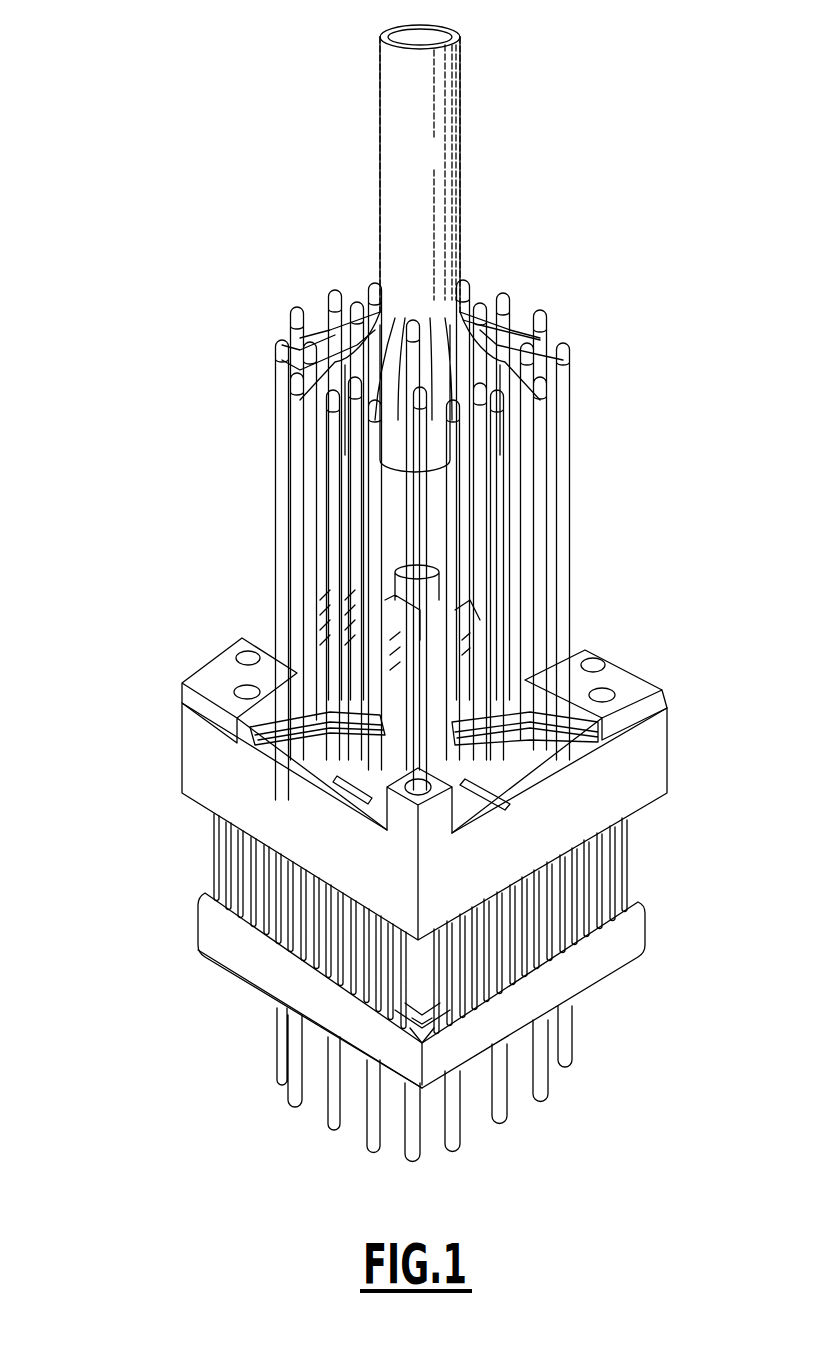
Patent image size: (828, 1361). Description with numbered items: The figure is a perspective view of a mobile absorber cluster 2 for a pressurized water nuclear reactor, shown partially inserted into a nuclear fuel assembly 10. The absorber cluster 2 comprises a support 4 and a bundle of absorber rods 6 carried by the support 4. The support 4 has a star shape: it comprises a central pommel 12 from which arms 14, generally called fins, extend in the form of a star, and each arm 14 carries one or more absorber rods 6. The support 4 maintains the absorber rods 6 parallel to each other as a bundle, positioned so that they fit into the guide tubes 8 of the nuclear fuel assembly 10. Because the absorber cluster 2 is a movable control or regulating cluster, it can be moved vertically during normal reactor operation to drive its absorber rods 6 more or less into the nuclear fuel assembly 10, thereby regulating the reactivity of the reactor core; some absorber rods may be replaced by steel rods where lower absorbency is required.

The absorber cluster 2 is at (617, 625).
The support 4 is at (447, 248).
The absorber rods 6 is at (337, 517).
The guide tubes 8 is at (543, 1082).
The nuclear fuel assembly 10 is at (172, 928).
The central pommel 12 is at (417, 190).
The arms 14 is at (293, 405).